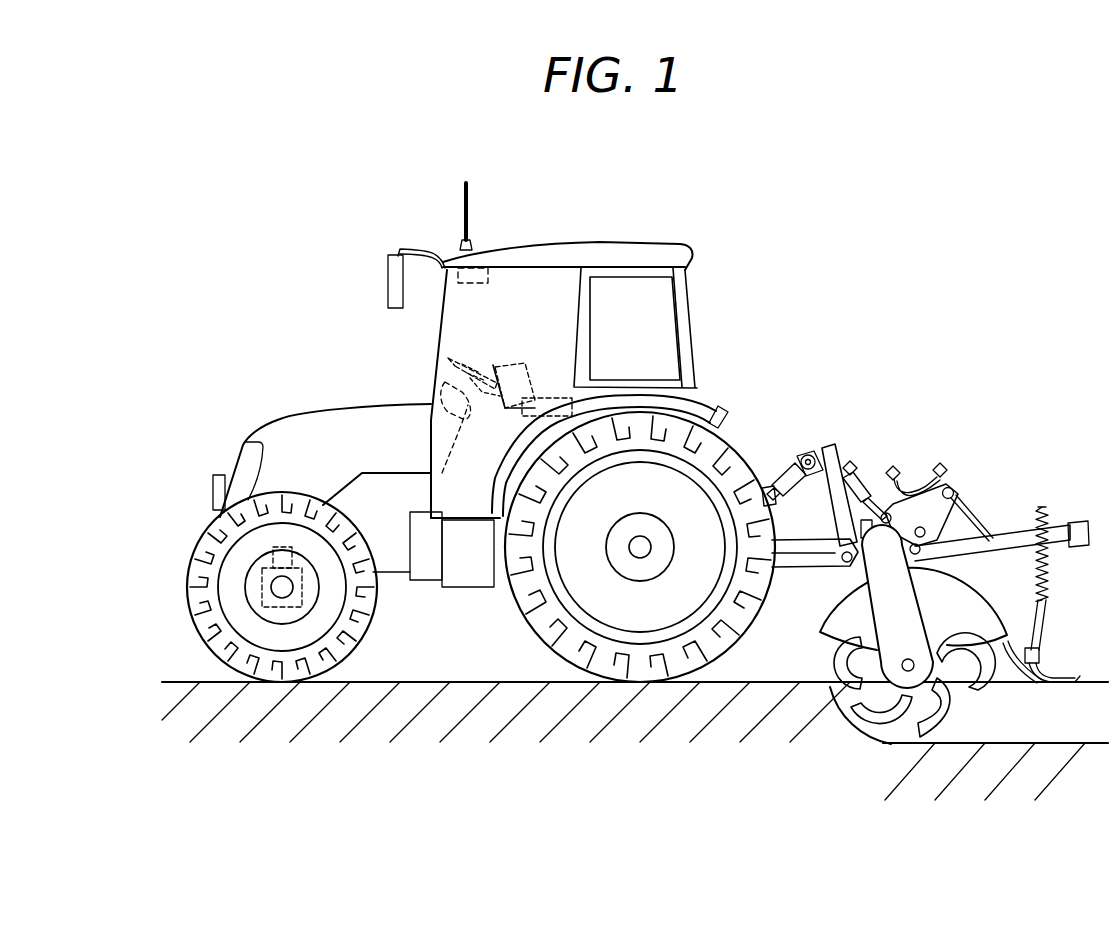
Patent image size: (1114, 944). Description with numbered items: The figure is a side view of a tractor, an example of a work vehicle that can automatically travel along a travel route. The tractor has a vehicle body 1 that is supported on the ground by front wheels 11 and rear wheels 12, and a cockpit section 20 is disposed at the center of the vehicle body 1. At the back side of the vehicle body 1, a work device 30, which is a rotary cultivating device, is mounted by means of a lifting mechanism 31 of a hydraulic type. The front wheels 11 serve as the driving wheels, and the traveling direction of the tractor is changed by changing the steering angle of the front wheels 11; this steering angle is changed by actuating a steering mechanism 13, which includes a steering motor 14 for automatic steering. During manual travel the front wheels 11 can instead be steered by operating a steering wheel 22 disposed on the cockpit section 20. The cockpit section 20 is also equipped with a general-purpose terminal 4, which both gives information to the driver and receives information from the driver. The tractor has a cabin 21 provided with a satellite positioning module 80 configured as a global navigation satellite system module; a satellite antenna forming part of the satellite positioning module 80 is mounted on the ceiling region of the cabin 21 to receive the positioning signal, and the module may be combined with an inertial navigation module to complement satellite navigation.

The vehicle body 1 is at (434, 610).
The general-purpose terminal 4 is at (527, 366).
The front wheels 11 is at (273, 673).
The rear wheels 12 is at (653, 662).
The steering mechanism 13 is at (260, 588).
The steering motor 14 is at (257, 553).
The cockpit section 20 is at (508, 362).
The cabin 21 is at (667, 255).
The steering wheel 22 is at (470, 365).
The work device 30 is at (915, 738).
The lifting mechanism 31 is at (860, 440).
The satellite positioning module 80 is at (489, 234).